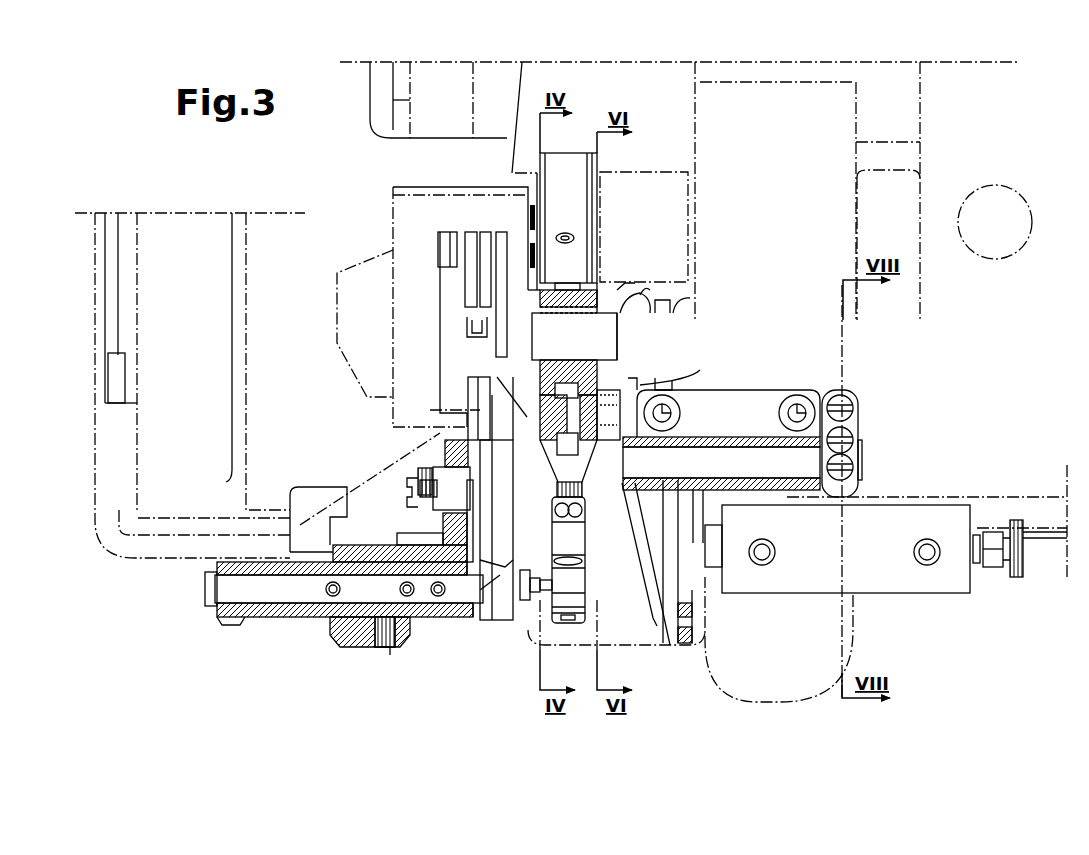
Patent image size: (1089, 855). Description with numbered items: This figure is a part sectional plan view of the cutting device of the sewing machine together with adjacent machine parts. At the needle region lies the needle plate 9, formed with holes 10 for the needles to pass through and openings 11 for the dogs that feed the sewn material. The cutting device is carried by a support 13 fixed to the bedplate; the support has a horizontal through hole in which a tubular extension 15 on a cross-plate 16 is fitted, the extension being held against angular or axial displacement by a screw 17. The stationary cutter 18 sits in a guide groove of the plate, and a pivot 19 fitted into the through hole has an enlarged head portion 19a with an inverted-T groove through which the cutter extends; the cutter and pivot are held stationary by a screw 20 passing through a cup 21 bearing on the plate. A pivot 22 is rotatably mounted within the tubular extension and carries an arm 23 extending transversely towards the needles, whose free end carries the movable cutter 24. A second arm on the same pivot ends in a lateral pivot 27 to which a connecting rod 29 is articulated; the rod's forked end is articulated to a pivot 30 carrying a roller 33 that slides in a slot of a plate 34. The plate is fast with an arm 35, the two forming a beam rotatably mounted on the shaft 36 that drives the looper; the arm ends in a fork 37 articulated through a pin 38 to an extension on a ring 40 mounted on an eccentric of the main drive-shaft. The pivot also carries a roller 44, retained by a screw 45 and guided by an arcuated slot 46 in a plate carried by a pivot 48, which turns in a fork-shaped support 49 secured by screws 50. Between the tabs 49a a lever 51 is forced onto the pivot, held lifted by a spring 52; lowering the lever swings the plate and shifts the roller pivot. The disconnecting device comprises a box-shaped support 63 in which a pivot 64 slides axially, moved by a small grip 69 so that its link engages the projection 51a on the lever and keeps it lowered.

The needle plate 9 is at (392, 213).
The holes 10 is at (486, 337).
The openings 11 is at (500, 236).
The support 13 is at (340, 625).
The tubular extension 15 is at (310, 617).
The cross-plate 16 is at (455, 617).
The screw 17 is at (388, 650).
The stationary cutter 18 is at (445, 450).
The pivot 19 is at (440, 455).
The head portion 19a is at (503, 561).
The screw 20 is at (410, 480).
The cup 21 is at (415, 515).
The pivot 22 is at (270, 590).
The arm 23 is at (498, 480).
The movable cutter 24 is at (468, 392).
The lateral pivot 27 is at (525, 600).
The connecting rod 29 is at (585, 552).
The pivot 30 is at (574, 336).
The roller 33 is at (540, 335).
The plate 34 is at (615, 440).
The arm 35 is at (600, 288).
The shaft 36 is at (622, 300).
The fork 37 is at (532, 235).
The pin 38 is at (532, 255).
The ring 40 is at (585, 197).
The roller 44 is at (625, 368).
The screw 45 is at (660, 378).
The arcuated slot 46 is at (672, 437).
The pivot 48 is at (722, 458).
The fork-shaped support 49 is at (757, 390).
The tabs 49a is at (812, 492).
The screws 50 is at (668, 408).
The lever 51 is at (694, 612).
The projection 51a is at (720, 482).
The spring 52 is at (760, 490).
The support 63 is at (922, 510).
The pivot 64 is at (993, 530).
The small grip 69 is at (1020, 577).